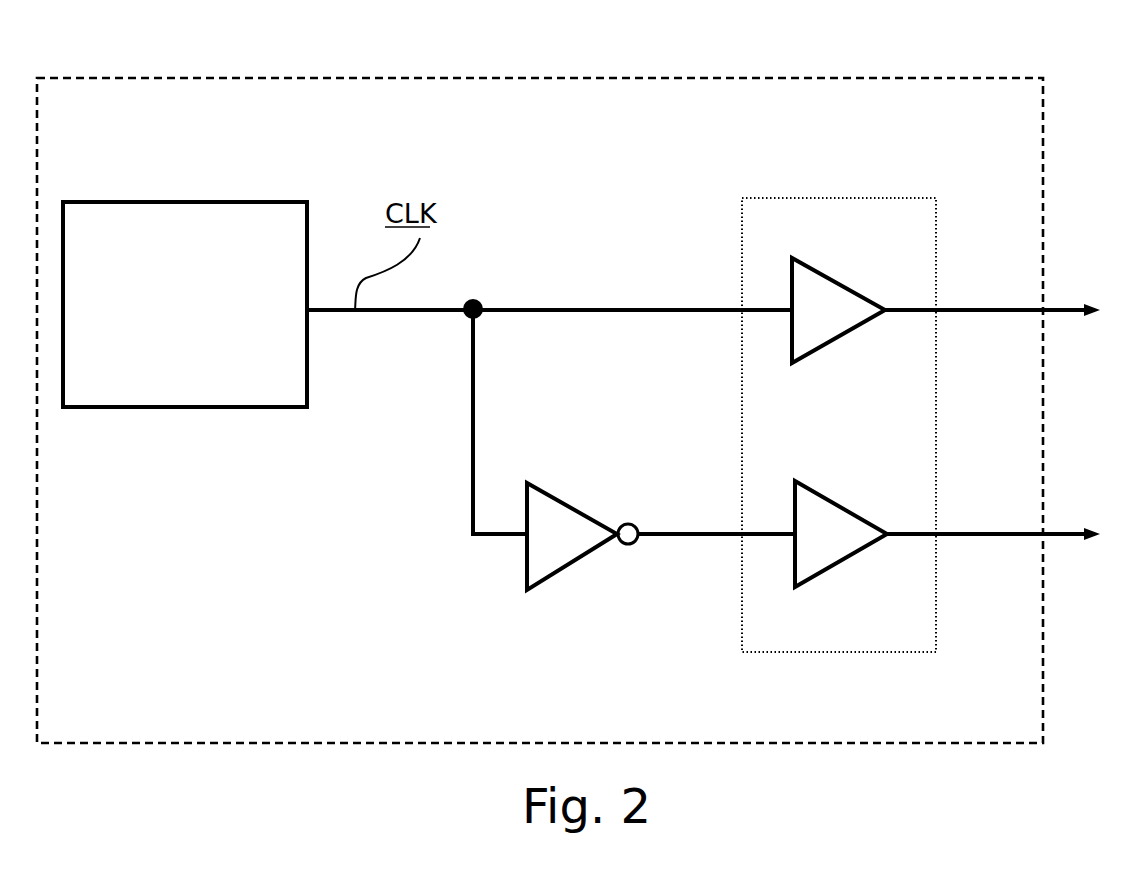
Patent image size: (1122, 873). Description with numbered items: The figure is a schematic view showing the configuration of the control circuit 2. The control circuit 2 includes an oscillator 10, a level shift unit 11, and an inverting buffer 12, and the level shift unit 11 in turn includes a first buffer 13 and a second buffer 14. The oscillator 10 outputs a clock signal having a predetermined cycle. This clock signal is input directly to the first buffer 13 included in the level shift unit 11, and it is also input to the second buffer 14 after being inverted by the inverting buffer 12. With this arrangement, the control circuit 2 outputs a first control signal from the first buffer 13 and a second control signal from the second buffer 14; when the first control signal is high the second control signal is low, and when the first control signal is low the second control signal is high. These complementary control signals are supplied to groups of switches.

The control circuit 2 is at (518, 78).
The oscillator 10 is at (250, 202).
The level shift unit 11 is at (808, 198).
The inverting buffer 12 is at (560, 570).
The first buffer 13 is at (825, 345).
The second buffer 14 is at (835, 565).